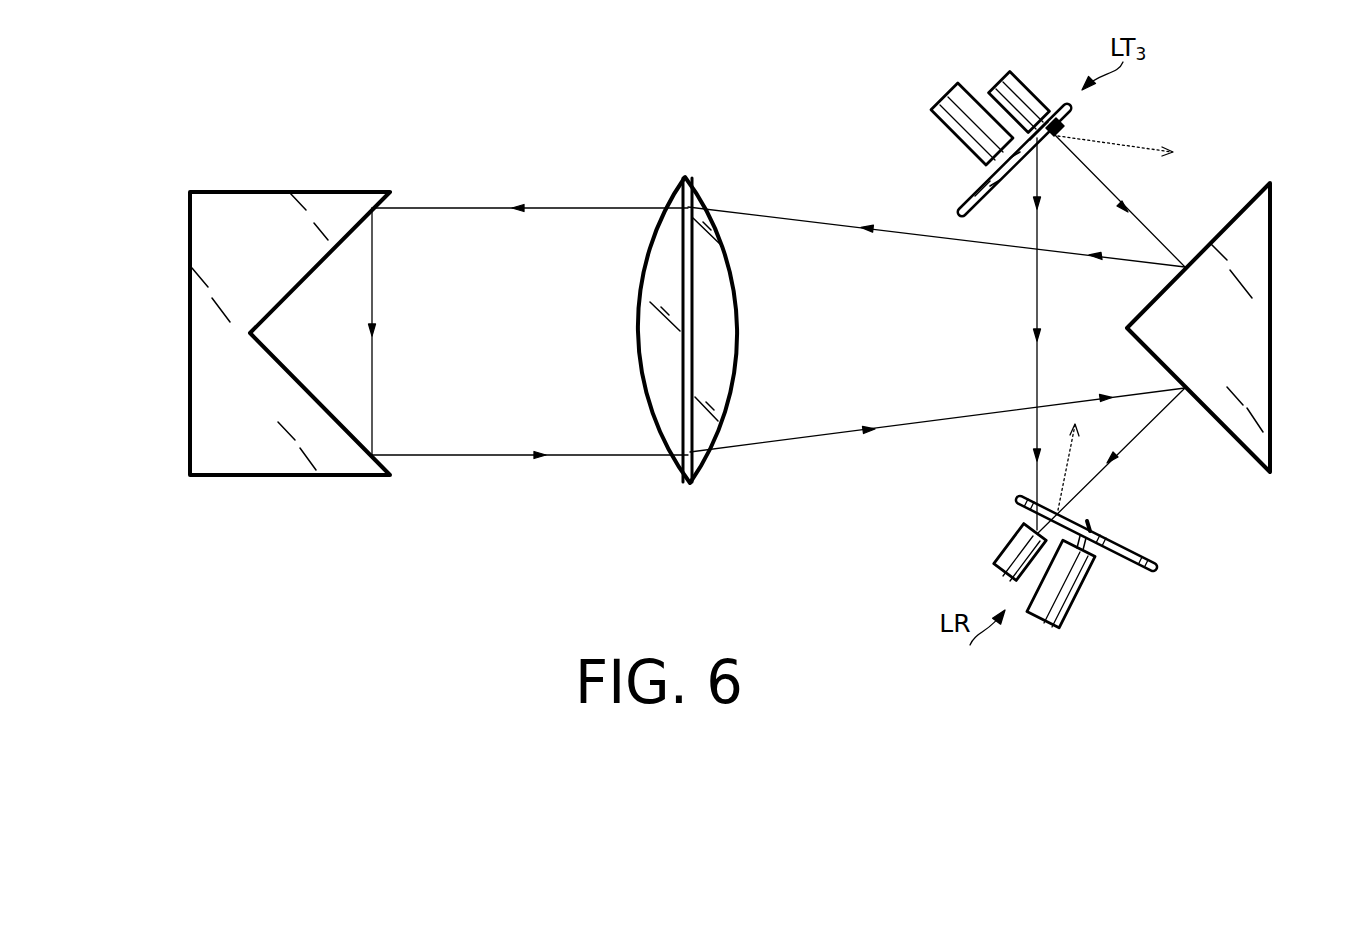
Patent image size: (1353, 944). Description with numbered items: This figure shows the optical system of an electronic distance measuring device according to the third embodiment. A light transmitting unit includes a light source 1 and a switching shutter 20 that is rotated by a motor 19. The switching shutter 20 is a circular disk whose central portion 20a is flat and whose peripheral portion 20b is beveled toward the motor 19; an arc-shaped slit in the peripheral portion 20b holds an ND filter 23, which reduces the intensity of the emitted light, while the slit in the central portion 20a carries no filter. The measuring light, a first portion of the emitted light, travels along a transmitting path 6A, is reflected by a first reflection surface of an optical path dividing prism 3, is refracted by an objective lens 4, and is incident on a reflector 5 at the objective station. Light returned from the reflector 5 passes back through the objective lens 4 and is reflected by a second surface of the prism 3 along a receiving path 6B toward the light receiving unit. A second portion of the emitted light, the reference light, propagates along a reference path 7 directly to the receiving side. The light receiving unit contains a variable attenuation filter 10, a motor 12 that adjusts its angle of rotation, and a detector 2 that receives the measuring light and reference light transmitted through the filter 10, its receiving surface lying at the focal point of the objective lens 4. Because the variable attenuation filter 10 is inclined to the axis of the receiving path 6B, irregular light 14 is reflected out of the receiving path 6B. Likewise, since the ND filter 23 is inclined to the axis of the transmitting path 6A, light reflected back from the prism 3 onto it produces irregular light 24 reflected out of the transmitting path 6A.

The light source 1 is at (1020, 90).
The detector 2 is at (1005, 552).
The optical path dividing prism 3 is at (1259, 361).
The objective lens 4 is at (730, 333).
The reflector 5 is at (248, 200).
The transmitting path 6A is at (553, 206).
The receiving path 6B is at (515, 455).
The reference path 7 is at (1036, 367).
The variable attenuation filter 10 is at (1135, 556).
The motor 12 is at (1073, 600).
The irregular light 14 is at (1073, 444).
The motor 19 is at (950, 102).
The switching shutter 20 is at (976, 189).
The central portion 20a is at (1040, 165).
The peripheral portion 20b is at (996, 194).
The ND filter 23 is at (1062, 132).
The irregular light 24 is at (1150, 144).